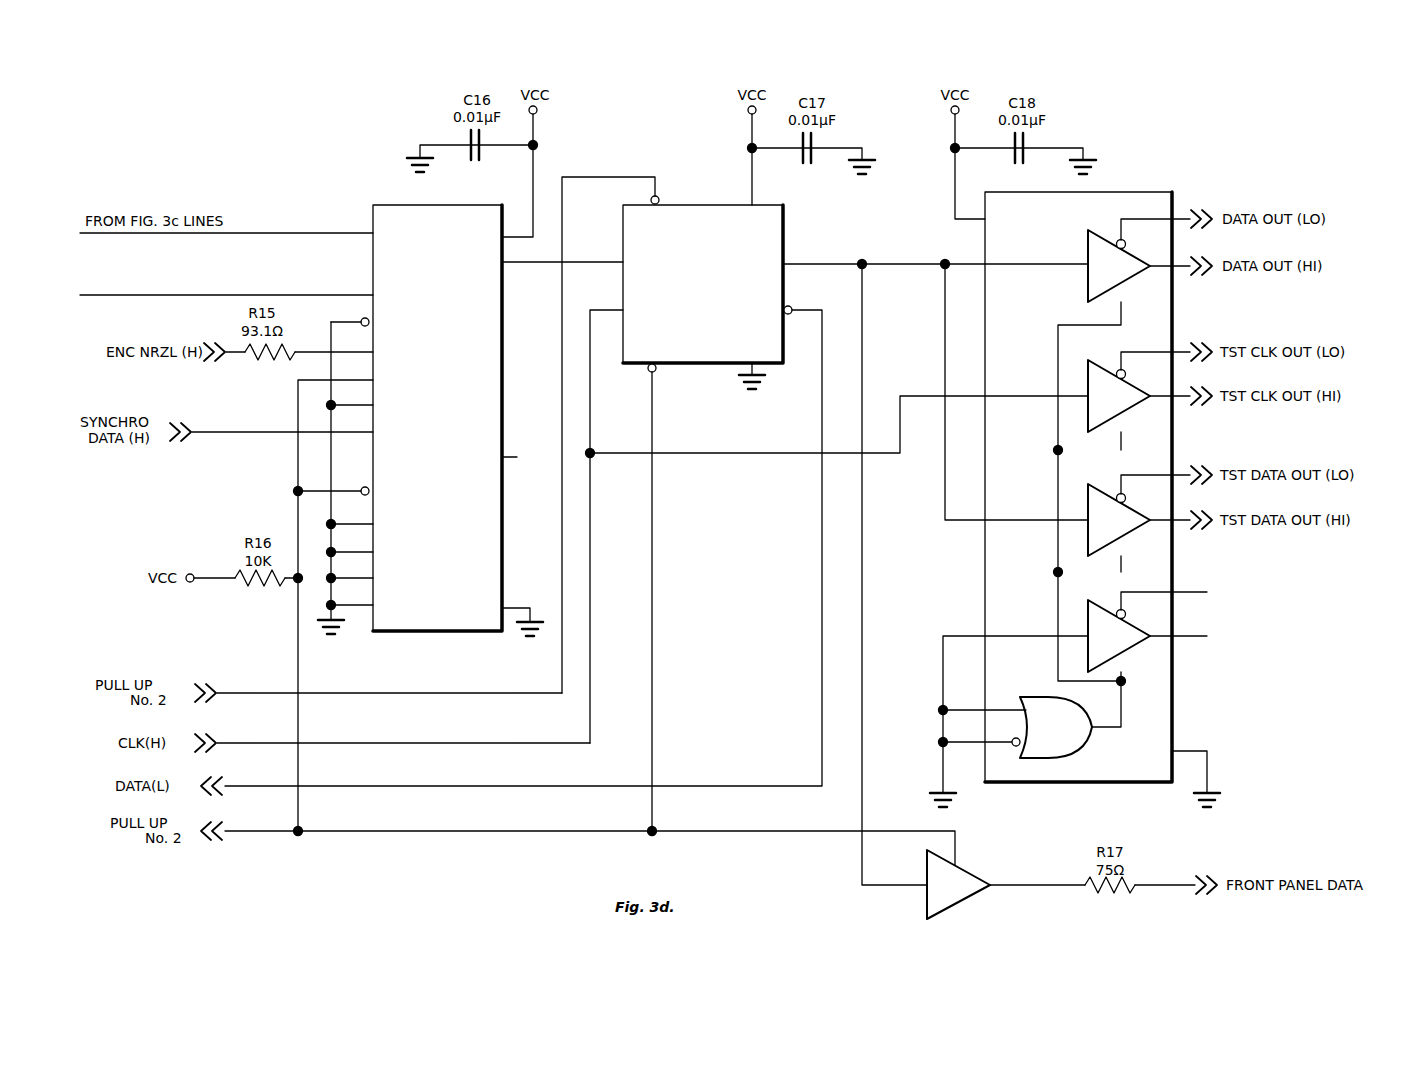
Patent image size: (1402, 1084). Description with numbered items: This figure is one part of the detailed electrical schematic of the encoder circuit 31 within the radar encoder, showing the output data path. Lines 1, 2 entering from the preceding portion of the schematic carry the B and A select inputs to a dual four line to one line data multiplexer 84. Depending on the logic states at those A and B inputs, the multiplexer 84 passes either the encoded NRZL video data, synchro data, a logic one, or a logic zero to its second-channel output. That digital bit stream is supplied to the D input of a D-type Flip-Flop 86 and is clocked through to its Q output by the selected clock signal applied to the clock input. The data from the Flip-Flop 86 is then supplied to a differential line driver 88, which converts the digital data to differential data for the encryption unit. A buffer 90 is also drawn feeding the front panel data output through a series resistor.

The encoder circuit 31 is at (1233, 126).
The dual four line to one line data multiplexer 84 is at (400, 205).
The D-type Flip-Flop 86 is at (722, 205).
The differential line driver 88 is at (1130, 192).
The buffer 90 is at (970, 876).
The line from FIG. 3c 1 is at (219, 234).
The line from FIG. 3c 2 is at (218, 296).